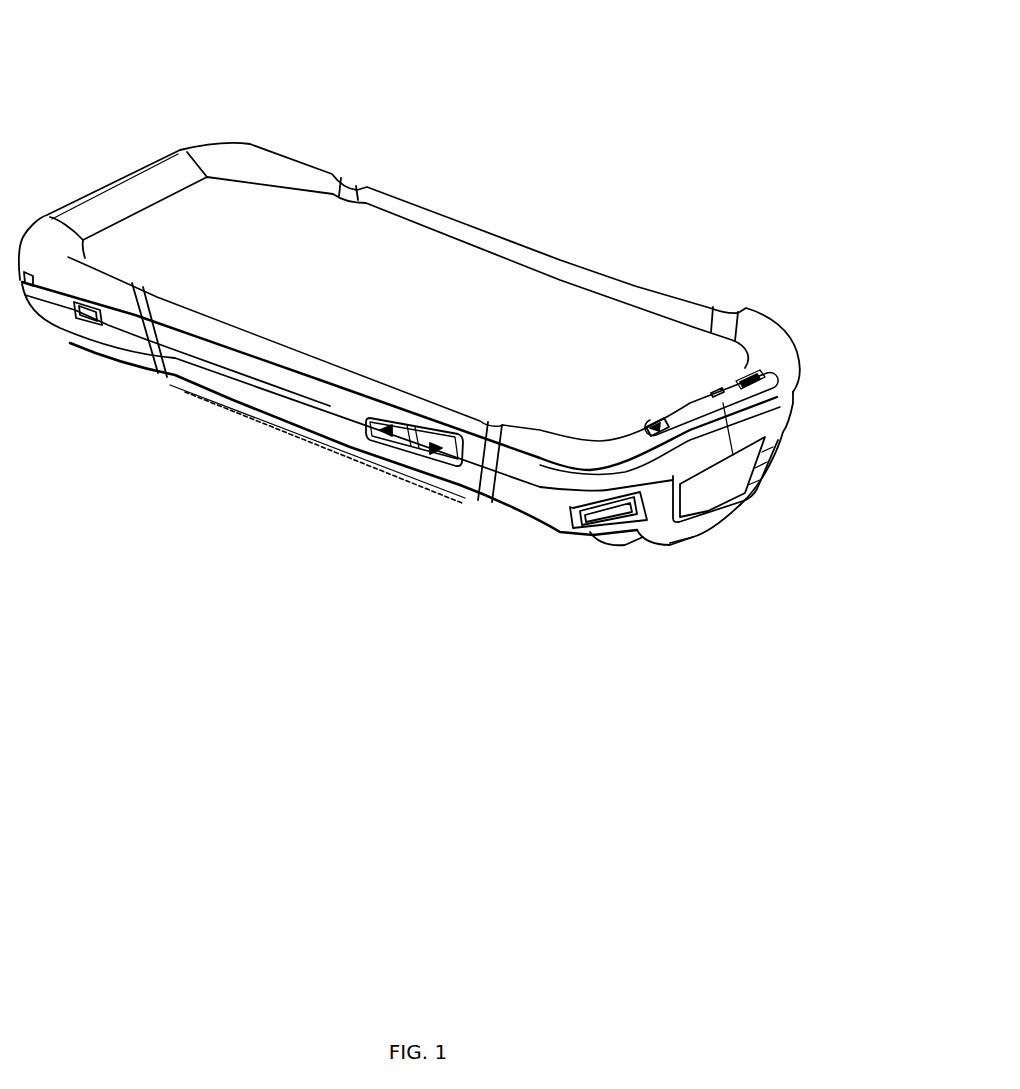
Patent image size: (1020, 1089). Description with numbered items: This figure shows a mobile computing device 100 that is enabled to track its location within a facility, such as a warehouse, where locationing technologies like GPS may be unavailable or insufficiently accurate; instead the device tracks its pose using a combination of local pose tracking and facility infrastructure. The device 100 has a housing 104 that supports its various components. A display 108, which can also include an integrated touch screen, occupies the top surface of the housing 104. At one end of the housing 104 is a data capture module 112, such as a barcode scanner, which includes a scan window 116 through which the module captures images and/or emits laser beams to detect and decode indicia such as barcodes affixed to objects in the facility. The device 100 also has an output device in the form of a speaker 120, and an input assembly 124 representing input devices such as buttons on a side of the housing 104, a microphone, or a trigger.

The mobile computing device 100 is at (238, 142).
The housing 104 is at (253, 400).
The display 108 is at (390, 294).
The data capture module 112 is at (783, 437).
The scan window 116 is at (707, 487).
The speaker 120 is at (709, 388).
The input assembly 124 is at (447, 455).